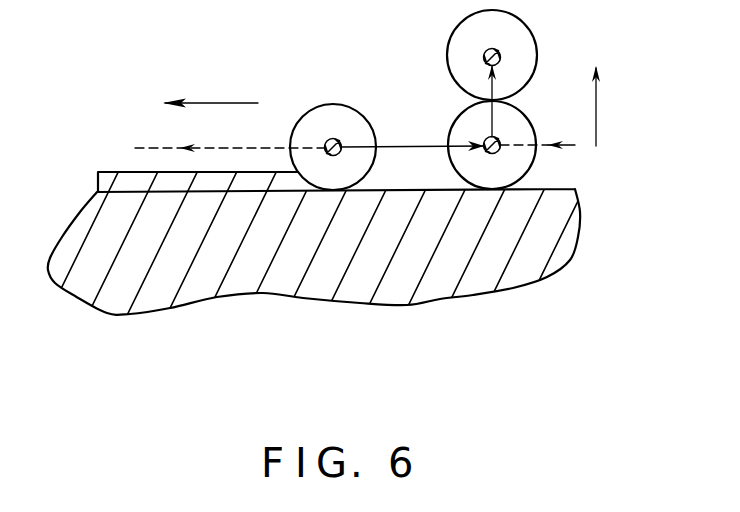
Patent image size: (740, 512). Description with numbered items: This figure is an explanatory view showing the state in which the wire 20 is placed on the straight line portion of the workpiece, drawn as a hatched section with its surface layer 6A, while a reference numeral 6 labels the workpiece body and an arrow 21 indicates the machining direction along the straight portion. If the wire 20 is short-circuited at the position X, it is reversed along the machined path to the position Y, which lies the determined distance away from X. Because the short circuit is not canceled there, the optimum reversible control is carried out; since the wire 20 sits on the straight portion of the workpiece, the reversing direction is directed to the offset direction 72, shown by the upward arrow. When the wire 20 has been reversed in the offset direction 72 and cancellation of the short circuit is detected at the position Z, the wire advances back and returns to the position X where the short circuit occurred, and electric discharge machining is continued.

The optical disk substrate 6 is at (580, 226).
The recording layer 6A is at (108, 172).
The wire 20 is at (330, 104).
The direction of movement 21 is at (213, 103).
The offset direction 72 is at (596, 100).